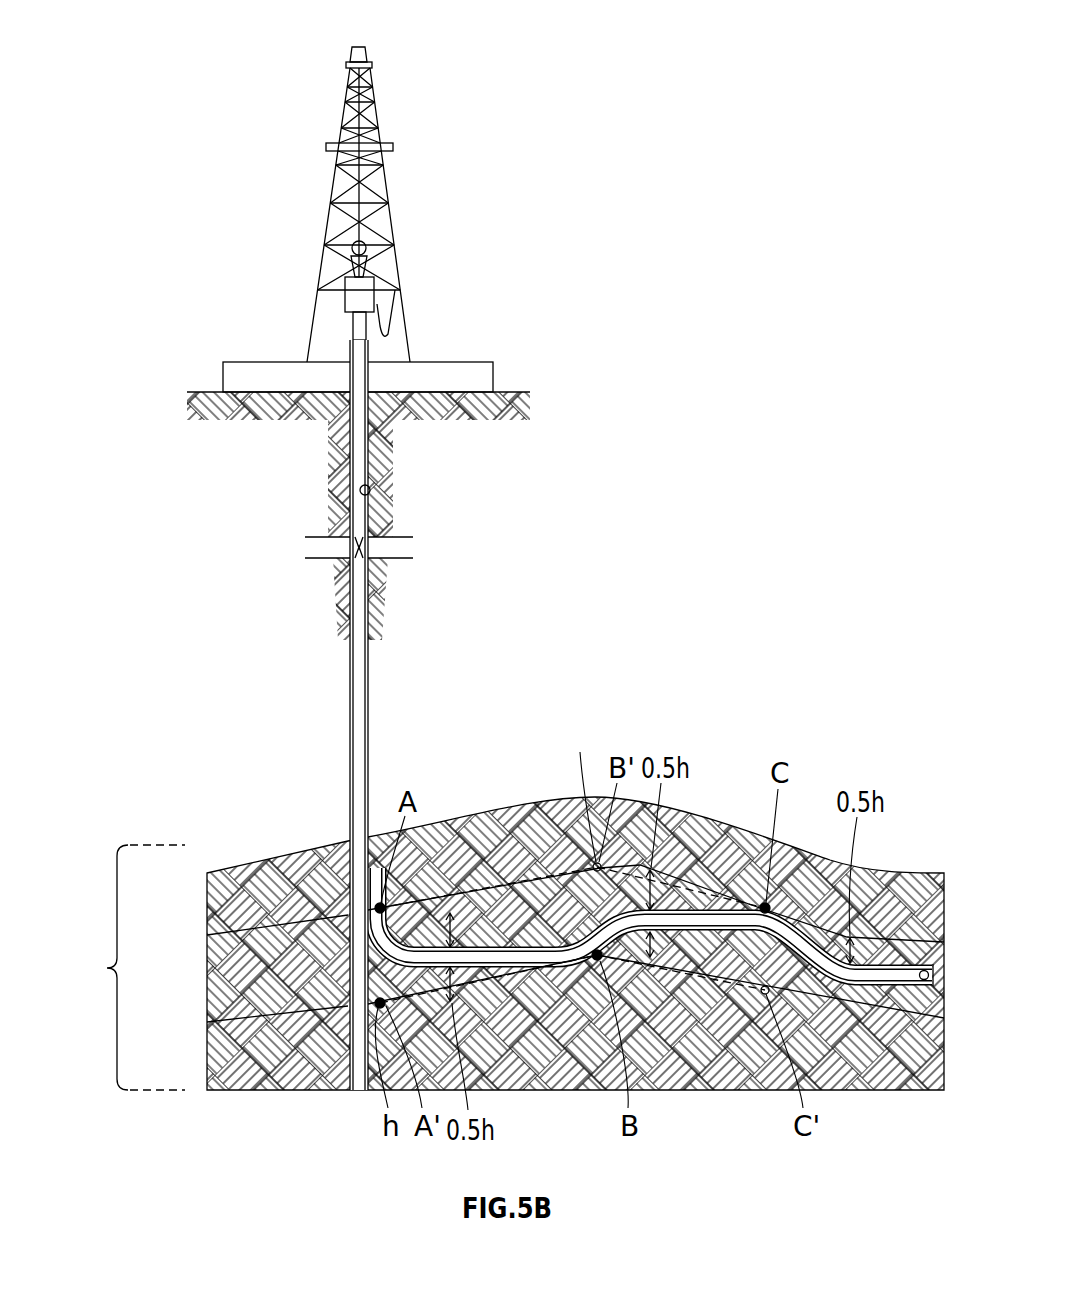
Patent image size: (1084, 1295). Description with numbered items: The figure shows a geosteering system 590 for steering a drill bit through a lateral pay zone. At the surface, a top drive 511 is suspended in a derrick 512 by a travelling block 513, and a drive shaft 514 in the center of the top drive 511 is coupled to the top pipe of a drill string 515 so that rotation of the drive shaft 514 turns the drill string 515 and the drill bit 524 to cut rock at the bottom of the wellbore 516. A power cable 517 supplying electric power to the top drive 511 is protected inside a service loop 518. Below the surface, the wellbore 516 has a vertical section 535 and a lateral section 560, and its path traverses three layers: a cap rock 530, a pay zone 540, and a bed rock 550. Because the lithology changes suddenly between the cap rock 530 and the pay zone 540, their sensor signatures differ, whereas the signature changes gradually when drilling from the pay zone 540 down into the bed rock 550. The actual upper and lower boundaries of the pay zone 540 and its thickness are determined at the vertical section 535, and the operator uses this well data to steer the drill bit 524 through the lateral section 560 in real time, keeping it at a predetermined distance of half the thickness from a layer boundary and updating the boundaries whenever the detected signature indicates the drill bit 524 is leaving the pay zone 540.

The geosteering system 590 is at (586, 61).
The derrick 512 is at (400, 268).
The power cable 517 is at (385, 185).
The travelling block 513 is at (346, 256).
The top drive 511 is at (345, 297).
The service loop 518 is at (395, 305).
The drive shaft 514 is at (350, 330).
The drill string 515 is at (350, 688).
The wellbore 516 is at (371, 492).
The lateral section 560 is at (942, 720).
The drill bit 524 is at (913, 987).
The pay zone 540 is at (224, 873).
The cap rock 530 is at (301, 879).
The vertical section 535 is at (118, 967).
The bed rock 550 is at (248, 1073).